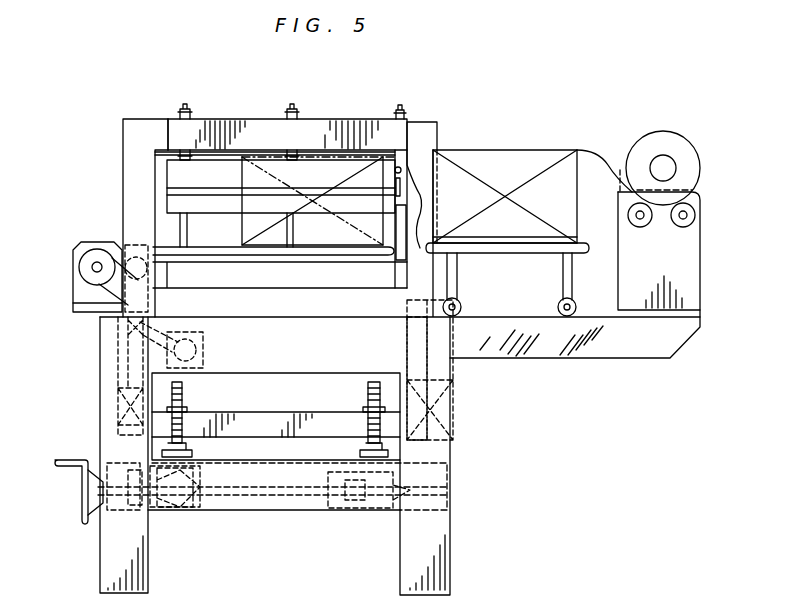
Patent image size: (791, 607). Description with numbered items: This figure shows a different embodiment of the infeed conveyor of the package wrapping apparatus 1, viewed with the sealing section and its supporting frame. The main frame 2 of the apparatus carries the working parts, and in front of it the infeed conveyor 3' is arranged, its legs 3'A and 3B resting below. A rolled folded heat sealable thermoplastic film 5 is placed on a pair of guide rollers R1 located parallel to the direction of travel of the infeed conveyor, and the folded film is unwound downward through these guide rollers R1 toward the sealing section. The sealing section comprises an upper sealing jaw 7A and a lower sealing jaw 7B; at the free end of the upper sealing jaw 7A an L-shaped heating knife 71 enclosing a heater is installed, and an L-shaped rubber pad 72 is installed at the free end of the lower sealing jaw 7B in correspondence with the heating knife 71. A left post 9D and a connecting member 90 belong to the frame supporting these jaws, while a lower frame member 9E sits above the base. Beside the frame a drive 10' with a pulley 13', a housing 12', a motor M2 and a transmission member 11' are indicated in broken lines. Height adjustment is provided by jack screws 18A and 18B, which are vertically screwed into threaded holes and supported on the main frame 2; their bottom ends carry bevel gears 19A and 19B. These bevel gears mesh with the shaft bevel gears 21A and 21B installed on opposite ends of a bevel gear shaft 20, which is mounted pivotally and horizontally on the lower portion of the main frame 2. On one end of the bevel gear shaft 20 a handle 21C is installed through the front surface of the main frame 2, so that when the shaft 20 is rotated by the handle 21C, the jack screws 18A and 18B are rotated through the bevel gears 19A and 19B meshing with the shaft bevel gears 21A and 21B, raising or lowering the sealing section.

The package wrapping apparatus 1 is at (262, 90).
The left frame post 9D is at (123, 182).
The upper sealing jaw 7A is at (395, 119).
The lower sealing jaw 7B is at (297, 280).
The L-shaped rubber pad 72 is at (397, 212).
The L-shaped heating knife 71 is at (401, 171).
The connecting bracket 90 is at (437, 128).
The sheet tray 3' is at (559, 222).
The tray leg with caster 3'A is at (470, 322).
The tray leg with caster 3B is at (558, 296).
The rolled folded heat sealable thermoplastic film 5 is at (648, 142).
The guide rollers R1 is at (676, 228).
The frame 2 is at (605, 348).
The drive motor 10' is at (83, 297).
The pulley 13' is at (312, 342).
The transmission belt housing 12' is at (86, 376).
The motor M2 is at (203, 348).
The transmission member 11' is at (453, 381).
The lower frame member 9E is at (296, 462).
The jack screw 18A is at (182, 395).
The jack screw 18B is at (368, 400).
The bevel gear 19B is at (447, 466).
The bevel gear shaft 20 is at (234, 497).
The shaft bevel gear 21A is at (165, 512).
The bevel gear 19A is at (205, 512).
The shaft bevel gear 21B is at (362, 512).
The handle 21C is at (82, 494).